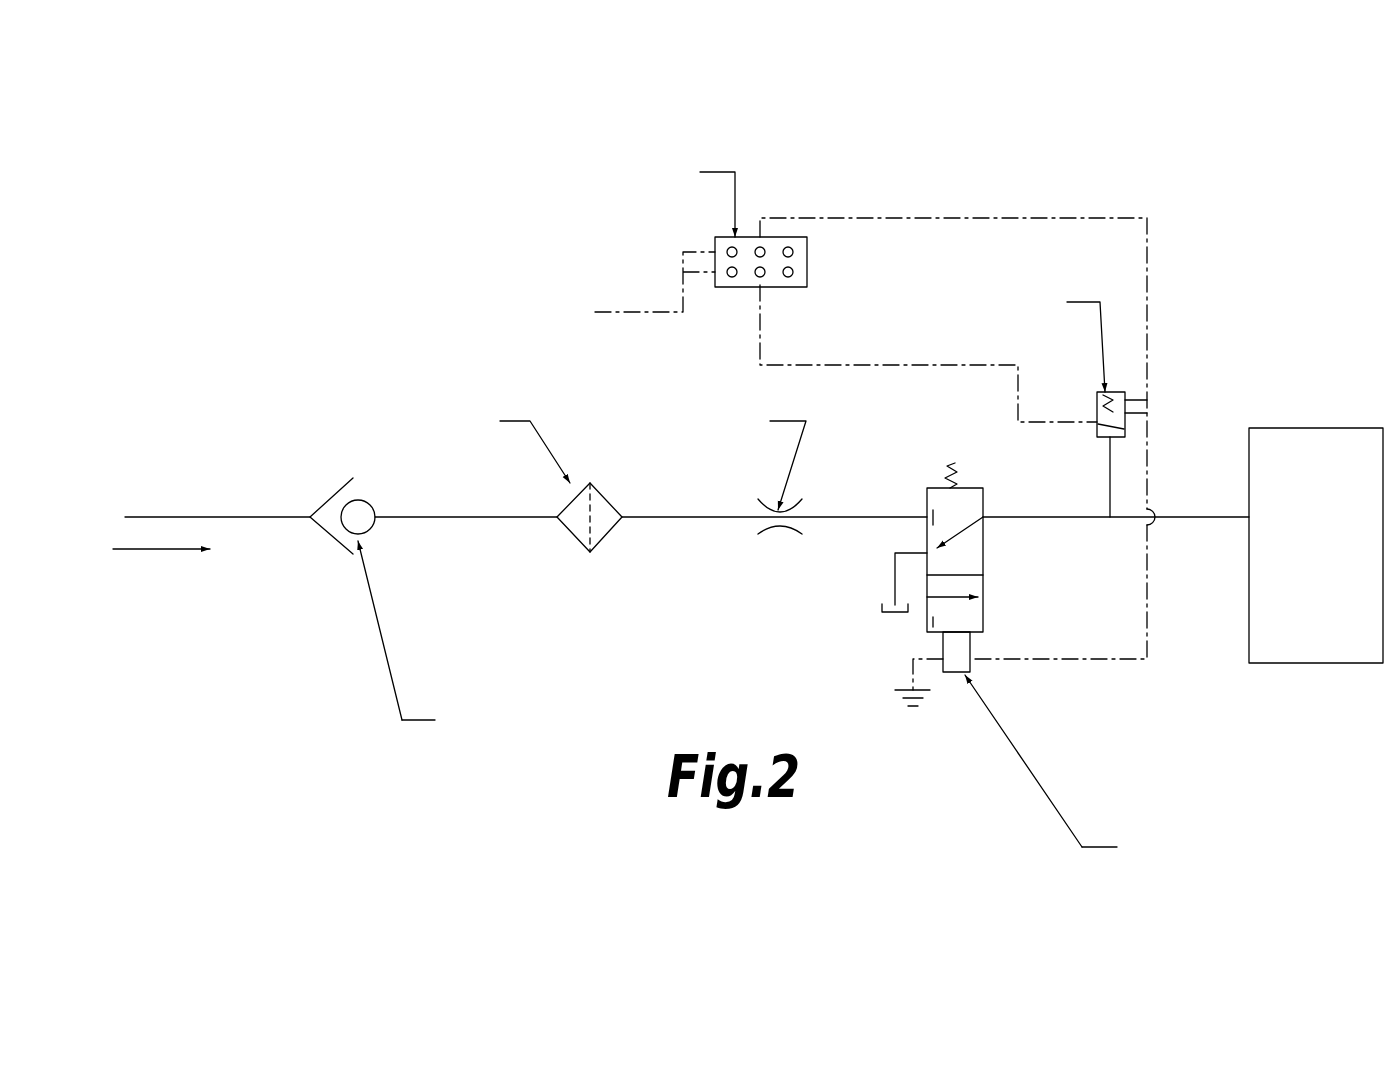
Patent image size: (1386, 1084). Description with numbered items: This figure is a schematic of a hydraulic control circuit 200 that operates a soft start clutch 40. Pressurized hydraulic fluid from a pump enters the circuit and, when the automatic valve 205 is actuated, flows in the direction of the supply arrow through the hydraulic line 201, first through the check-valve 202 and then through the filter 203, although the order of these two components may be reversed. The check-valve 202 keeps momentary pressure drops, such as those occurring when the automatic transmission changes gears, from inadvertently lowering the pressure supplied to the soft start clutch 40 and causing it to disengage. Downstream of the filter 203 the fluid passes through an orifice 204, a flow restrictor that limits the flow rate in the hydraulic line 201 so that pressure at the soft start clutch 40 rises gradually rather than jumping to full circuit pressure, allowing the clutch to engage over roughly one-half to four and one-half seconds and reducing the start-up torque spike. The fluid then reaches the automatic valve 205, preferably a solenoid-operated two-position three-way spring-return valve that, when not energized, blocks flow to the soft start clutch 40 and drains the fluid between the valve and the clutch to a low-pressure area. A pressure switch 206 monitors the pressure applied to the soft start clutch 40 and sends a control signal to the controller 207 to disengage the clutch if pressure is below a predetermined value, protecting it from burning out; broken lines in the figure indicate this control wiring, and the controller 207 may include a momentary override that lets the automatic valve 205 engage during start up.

The hydraulic control circuit 200 is at (1183, 158).
The hydraulic line 201 is at (262, 517).
The check-valve 202 is at (327, 545).
The filter 203 is at (572, 537).
The orifice 204 is at (743, 555).
The automatic valve 205 is at (875, 648).
The pressure switch 206 is at (1125, 398).
The controller 207 is at (780, 237).
The soft start clutch 40 is at (1318, 428).